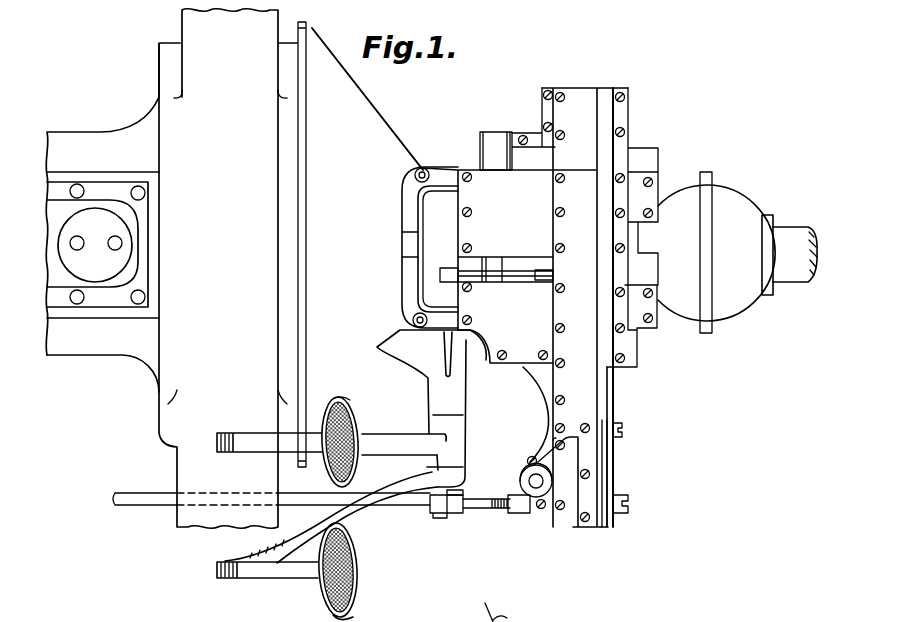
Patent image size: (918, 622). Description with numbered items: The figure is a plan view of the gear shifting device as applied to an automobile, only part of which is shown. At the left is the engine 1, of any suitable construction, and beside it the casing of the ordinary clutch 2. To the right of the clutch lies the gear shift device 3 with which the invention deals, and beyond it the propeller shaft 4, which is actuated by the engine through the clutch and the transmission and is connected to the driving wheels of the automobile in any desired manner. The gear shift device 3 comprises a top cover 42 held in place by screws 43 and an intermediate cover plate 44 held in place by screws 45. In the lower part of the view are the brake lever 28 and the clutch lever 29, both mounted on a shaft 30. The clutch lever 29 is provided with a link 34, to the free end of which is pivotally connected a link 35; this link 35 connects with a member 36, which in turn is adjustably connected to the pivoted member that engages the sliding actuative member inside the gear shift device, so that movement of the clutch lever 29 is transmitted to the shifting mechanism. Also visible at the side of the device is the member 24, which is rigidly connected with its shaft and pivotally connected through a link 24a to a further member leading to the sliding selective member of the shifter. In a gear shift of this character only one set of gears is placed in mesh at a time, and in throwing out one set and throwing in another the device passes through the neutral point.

The engine 1 is at (73, 176).
The casing of the clutch 2 is at (344, 107).
The gear shift device 3 is at (517, 129).
The propeller shaft 4 is at (792, 242).
The member 24 is at (618, 512).
The link 24a is at (612, 463).
The brake lever 28 is at (378, 443).
The clutch lever 29 is at (358, 502).
The shaft 30 is at (447, 513).
The link 34 is at (463, 502).
The link 35 is at (487, 508).
The member 36 is at (537, 502).
The top cover 42 is at (553, 415).
The screws 43 is at (557, 211).
The intermediate cover plate 44 is at (521, 362).
The screws 45 is at (471, 180).